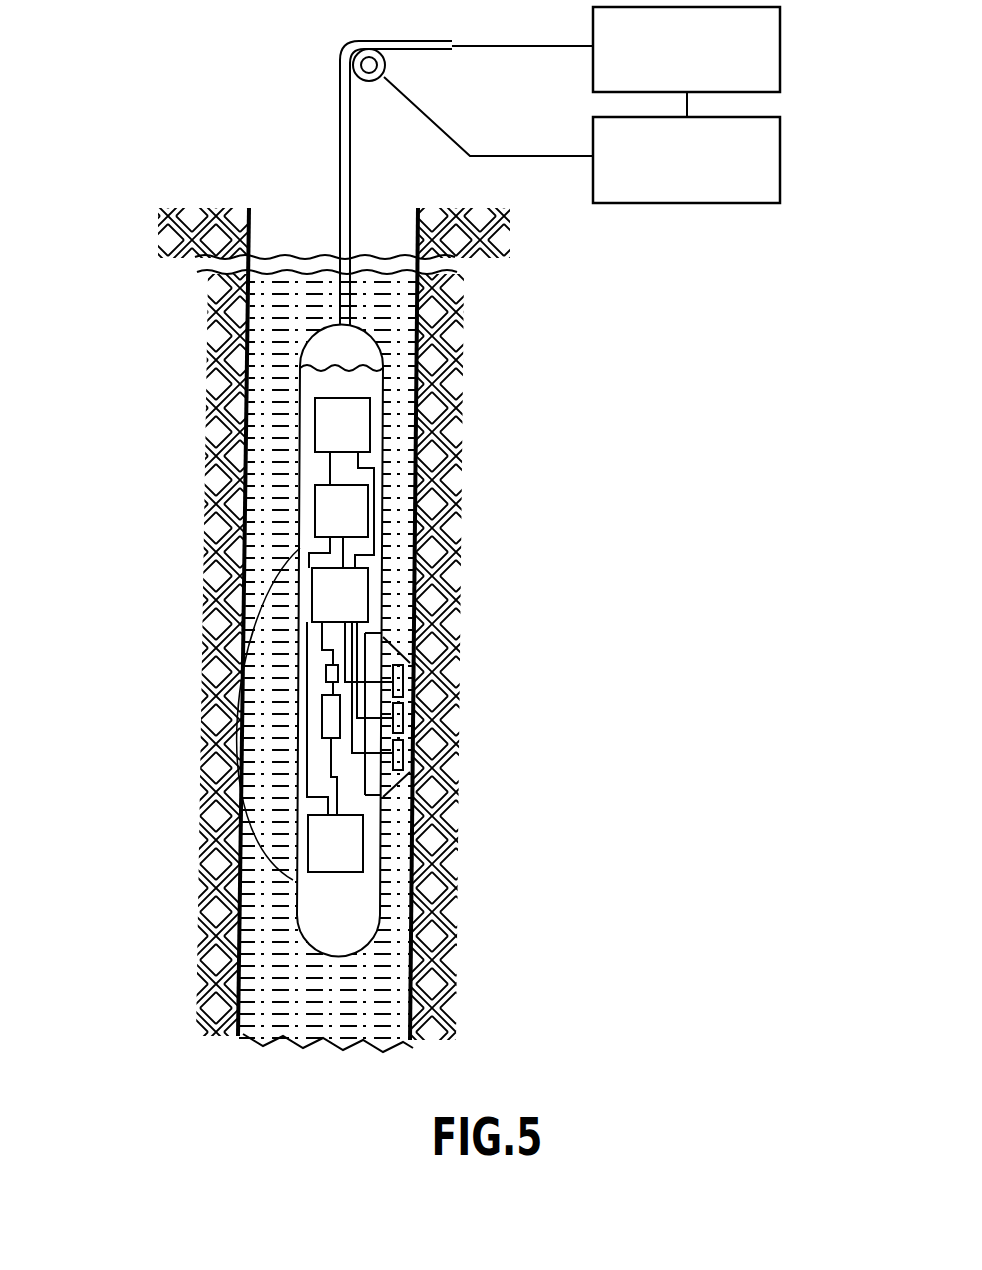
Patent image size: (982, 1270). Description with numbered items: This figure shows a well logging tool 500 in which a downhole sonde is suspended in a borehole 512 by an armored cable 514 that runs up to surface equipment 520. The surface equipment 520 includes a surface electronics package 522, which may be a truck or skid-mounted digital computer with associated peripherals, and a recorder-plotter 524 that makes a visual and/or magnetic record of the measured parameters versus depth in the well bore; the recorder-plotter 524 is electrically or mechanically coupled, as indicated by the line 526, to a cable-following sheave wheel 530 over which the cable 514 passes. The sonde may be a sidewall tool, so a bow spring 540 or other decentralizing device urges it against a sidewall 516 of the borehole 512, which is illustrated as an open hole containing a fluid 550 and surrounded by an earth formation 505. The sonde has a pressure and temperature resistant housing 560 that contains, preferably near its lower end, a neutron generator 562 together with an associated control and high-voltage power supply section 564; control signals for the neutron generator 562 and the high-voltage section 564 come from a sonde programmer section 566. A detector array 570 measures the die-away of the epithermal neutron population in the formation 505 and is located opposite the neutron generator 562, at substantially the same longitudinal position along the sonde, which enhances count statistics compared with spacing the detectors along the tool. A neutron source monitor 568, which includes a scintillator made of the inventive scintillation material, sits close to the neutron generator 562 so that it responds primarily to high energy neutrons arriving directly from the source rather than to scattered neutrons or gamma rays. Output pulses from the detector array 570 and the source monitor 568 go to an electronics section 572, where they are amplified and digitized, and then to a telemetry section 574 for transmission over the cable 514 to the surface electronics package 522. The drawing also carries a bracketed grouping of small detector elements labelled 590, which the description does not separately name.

The well logging tool 500 is at (136, 671).
The earth formation 505 is at (446, 963).
The borehole 512 is at (307, 224).
The armored cable 514 is at (351, 186).
The sidewall 516 is at (432, 506).
The surface equipment 520 is at (811, 101).
The surface electronics package 522 is at (781, 32).
The recorder-plotter 524 is at (781, 180).
The line 526 is at (528, 156).
The cable-following sheave wheel 530 is at (386, 71).
The bow spring 540 is at (242, 861).
The fluid 550 is at (328, 663).
The housing 560 is at (388, 405).
The neutron generator 562 is at (322, 727).
The control and high-voltage power supply section 564 is at (355, 856).
The sonde programmer section 566 is at (360, 522).
The neutron source monitor 568 is at (324, 672).
The detector array 570 is at (425, 599).
The electronics section 572 is at (359, 606).
The telemetry section 574 is at (361, 435).
The detectors 590 is at (455, 662).